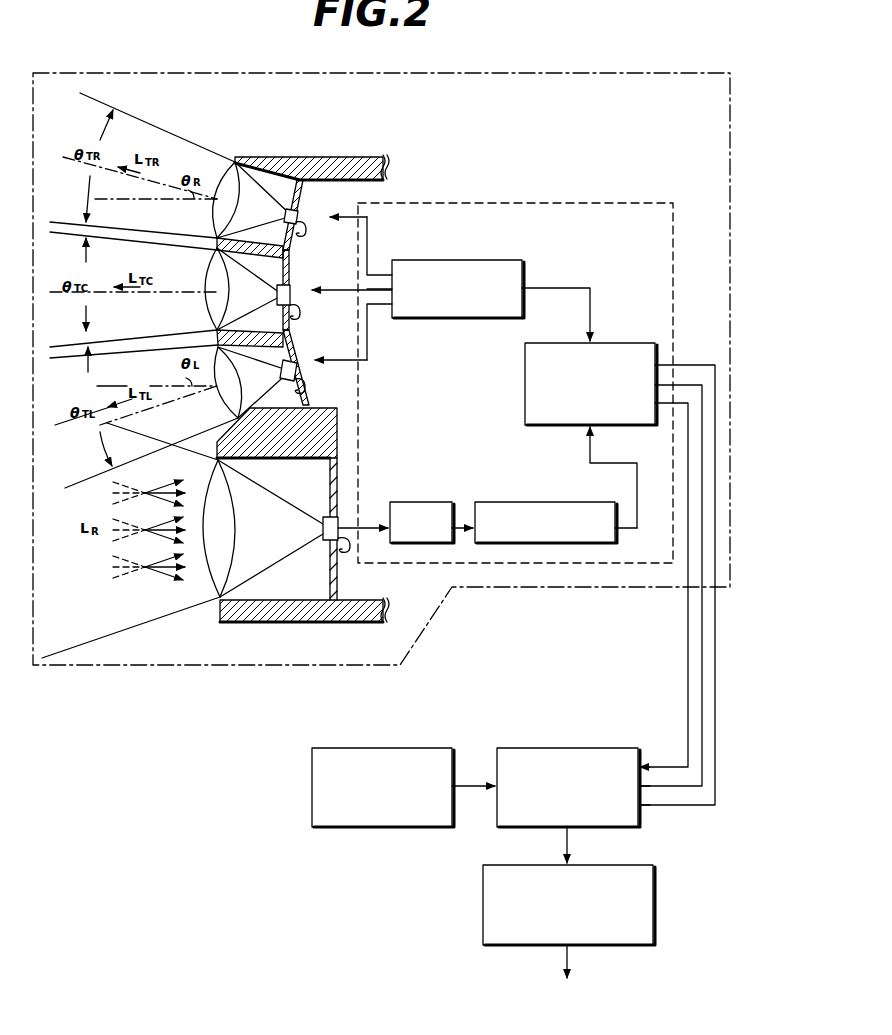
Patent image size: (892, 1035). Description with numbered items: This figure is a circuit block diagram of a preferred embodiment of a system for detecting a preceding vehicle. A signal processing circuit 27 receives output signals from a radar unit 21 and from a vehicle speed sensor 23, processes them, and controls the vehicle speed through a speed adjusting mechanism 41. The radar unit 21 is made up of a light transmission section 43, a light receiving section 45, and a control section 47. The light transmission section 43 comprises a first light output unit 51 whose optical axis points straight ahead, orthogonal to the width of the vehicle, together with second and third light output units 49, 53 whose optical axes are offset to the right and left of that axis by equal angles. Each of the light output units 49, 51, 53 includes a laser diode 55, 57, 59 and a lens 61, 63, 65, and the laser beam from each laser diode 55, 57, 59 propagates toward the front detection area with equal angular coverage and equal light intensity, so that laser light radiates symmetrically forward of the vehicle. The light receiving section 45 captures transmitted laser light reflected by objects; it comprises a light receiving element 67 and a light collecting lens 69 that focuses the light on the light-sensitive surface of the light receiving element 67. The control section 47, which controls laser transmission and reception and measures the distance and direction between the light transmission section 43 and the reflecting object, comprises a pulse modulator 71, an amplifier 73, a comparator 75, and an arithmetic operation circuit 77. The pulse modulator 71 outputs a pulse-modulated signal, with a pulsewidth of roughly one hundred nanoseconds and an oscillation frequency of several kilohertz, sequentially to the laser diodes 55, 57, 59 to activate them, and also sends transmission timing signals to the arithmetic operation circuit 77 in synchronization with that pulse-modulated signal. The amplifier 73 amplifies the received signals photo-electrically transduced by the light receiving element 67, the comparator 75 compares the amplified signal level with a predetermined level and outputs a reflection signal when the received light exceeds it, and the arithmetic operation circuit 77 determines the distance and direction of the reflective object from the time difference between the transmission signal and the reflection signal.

The radar unit 21 is at (250, 667).
The vehicle speed sensor 23 is at (428, 748).
The signal processing circuit 27 is at (612, 748).
The speed adjusting mechanism 41 is at (483, 884).
The light transmission section 43 is at (325, 151).
The light receiving section 45 is at (306, 622).
The control section 47 is at (548, 202).
The second light output unit 49 is at (303, 190).
The first light output unit 51 is at (290, 266).
The third light output unit 53 is at (292, 346).
The laser diode 55 is at (306, 224).
The laser diode 57 is at (296, 290).
The laser diode 59 is at (298, 362).
The lens 61 is at (212, 210).
The lens 63 is at (212, 304).
The lens 65 is at (226, 410).
The light receiving element 67 is at (343, 518).
The light collecting lens 69 is at (208, 582).
The pulse modulator 71 is at (502, 259).
The amplifier 73 is at (440, 501).
The comparator 75 is at (503, 501).
The arithmetic operation circuit 77 is at (523, 360).